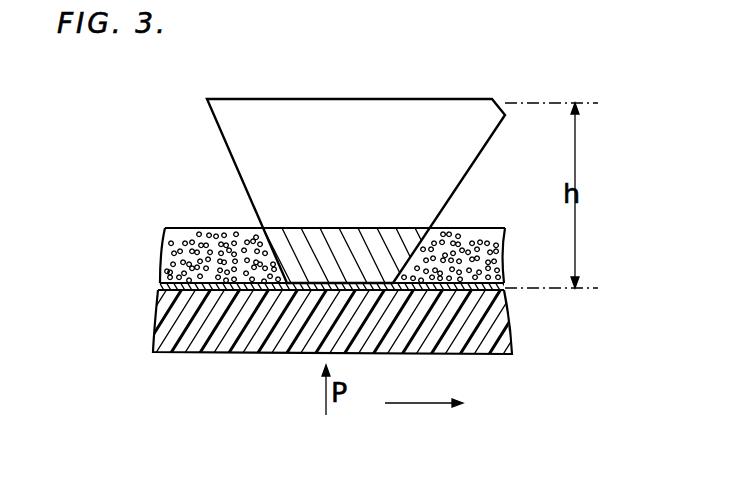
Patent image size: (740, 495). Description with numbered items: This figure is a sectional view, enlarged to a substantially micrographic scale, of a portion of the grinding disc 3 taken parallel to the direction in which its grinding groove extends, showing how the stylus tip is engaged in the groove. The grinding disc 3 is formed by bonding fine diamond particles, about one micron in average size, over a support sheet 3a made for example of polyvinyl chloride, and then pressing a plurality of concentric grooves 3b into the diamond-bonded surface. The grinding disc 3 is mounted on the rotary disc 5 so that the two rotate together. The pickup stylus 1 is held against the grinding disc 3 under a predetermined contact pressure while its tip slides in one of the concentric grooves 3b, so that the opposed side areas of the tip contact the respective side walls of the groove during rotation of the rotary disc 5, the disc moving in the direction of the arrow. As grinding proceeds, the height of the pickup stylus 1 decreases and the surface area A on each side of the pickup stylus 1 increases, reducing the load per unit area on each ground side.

The pickup stylus 1 is at (373, 118).
The grinding disc 3 is at (354, 220).
The support sheet 3a is at (508, 289).
The concentric grooves 3b is at (207, 240).
The rotary disc 5 is at (255, 350).
The surface area A is at (352, 235).